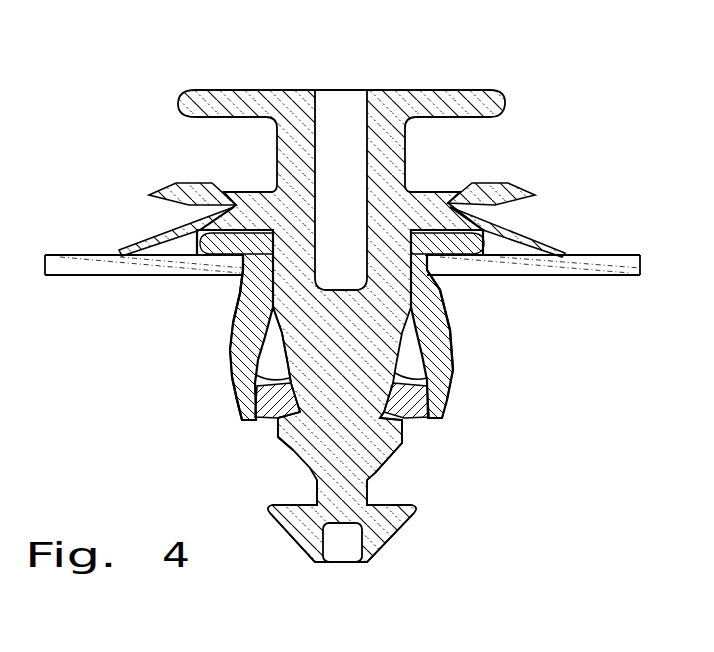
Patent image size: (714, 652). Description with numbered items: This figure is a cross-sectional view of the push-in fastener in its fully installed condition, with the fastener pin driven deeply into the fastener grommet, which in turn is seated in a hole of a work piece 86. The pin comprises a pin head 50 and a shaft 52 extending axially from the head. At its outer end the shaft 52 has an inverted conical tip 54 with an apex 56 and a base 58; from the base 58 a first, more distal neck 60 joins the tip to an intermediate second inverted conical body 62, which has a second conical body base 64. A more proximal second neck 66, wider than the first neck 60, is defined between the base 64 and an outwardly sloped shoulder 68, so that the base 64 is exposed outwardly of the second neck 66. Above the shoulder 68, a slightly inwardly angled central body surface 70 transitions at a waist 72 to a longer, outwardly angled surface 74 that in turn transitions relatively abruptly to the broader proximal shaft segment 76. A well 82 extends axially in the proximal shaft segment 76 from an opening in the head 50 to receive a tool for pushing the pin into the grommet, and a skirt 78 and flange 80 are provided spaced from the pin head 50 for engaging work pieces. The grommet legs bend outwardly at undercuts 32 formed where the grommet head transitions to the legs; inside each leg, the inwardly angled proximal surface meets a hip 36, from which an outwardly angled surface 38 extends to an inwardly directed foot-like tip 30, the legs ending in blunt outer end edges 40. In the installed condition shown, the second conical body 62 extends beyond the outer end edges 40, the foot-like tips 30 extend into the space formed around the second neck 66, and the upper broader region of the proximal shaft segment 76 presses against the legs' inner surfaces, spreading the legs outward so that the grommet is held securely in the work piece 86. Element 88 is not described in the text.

The foot-like tip 30 is at (236, 400).
The undercut 32 is at (258, 232).
The hip 36 is at (440, 306).
The outwardly angled surface 38 is at (432, 340).
The outer end edge 40 is at (247, 422).
The pin head 50 is at (480, 93).
The shaft 52 is at (345, 340).
The inverted conical tip 54 is at (387, 530).
The apex 56 is at (317, 563).
The base 58 is at (290, 500).
The first neck 60 is at (368, 495).
The second inverted conical body 62 is at (352, 455).
The second conical body base 64 is at (398, 442).
The second neck 66 is at (290, 448).
The outwardly sloped shoulder 68 is at (232, 385).
The central body surface 70 is at (232, 360).
The waist 72 is at (434, 375).
The outwardly angled surface 74 is at (236, 332).
The proximal shaft segment 76 is at (397, 250).
The skirt 78 is at (150, 233).
The flange 80 is at (176, 183).
The well 82 is at (333, 115).
The work piece 86 is at (92, 275).
The panel hole edge 88 is at (243, 275).